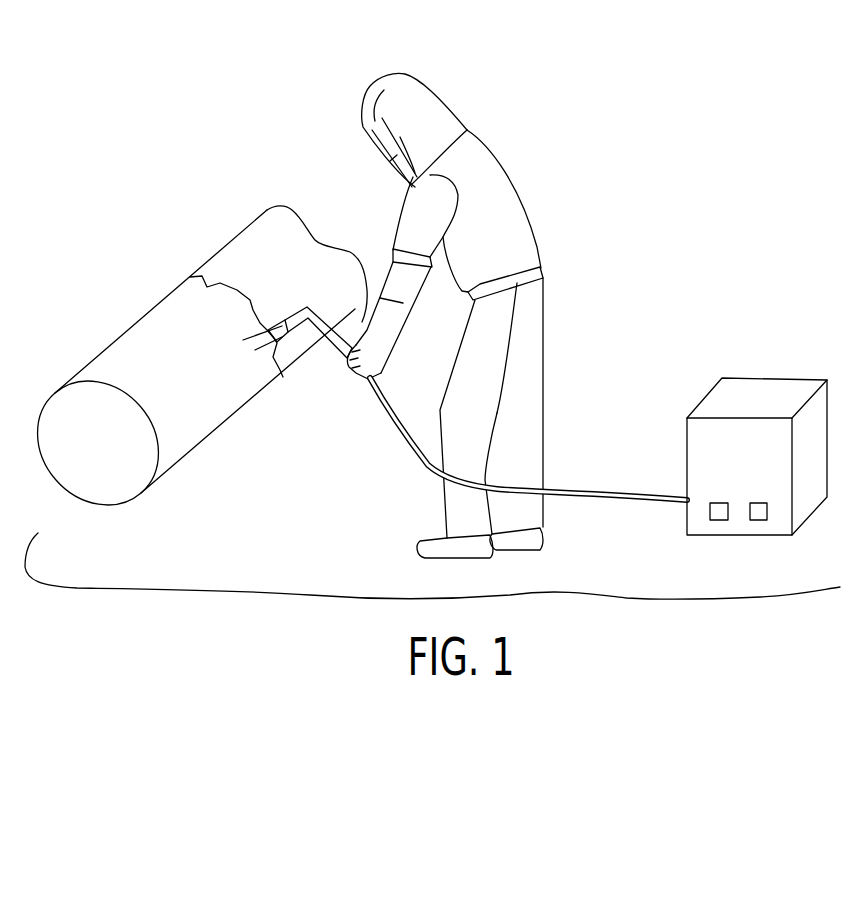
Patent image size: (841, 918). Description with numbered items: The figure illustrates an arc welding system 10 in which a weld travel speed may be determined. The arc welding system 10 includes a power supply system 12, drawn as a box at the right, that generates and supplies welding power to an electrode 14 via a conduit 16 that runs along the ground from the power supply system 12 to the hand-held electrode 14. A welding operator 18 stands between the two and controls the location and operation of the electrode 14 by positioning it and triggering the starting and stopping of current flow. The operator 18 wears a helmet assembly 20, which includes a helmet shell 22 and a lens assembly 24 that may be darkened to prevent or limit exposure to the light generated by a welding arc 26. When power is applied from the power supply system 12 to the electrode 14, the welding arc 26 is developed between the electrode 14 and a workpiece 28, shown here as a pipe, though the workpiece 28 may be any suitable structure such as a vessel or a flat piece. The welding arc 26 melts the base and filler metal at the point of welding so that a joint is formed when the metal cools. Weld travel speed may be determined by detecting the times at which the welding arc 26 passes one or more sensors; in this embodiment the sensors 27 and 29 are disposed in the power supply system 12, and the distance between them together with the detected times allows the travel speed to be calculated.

The arc welding system 10 is at (700, 80).
The power supply system 12 is at (778, 377).
The electrode 14 is at (330, 329).
The conduit 16 is at (607, 492).
The operator 18 is at (533, 203).
The helmet assembly 20 is at (440, 80).
The helmet shell 22 is at (442, 138).
The lens assembly 24 is at (383, 150).
The welding arc 26 is at (262, 357).
The sensor 27 is at (713, 520).
The workpiece 28 is at (158, 300).
The sensor 29 is at (760, 520).